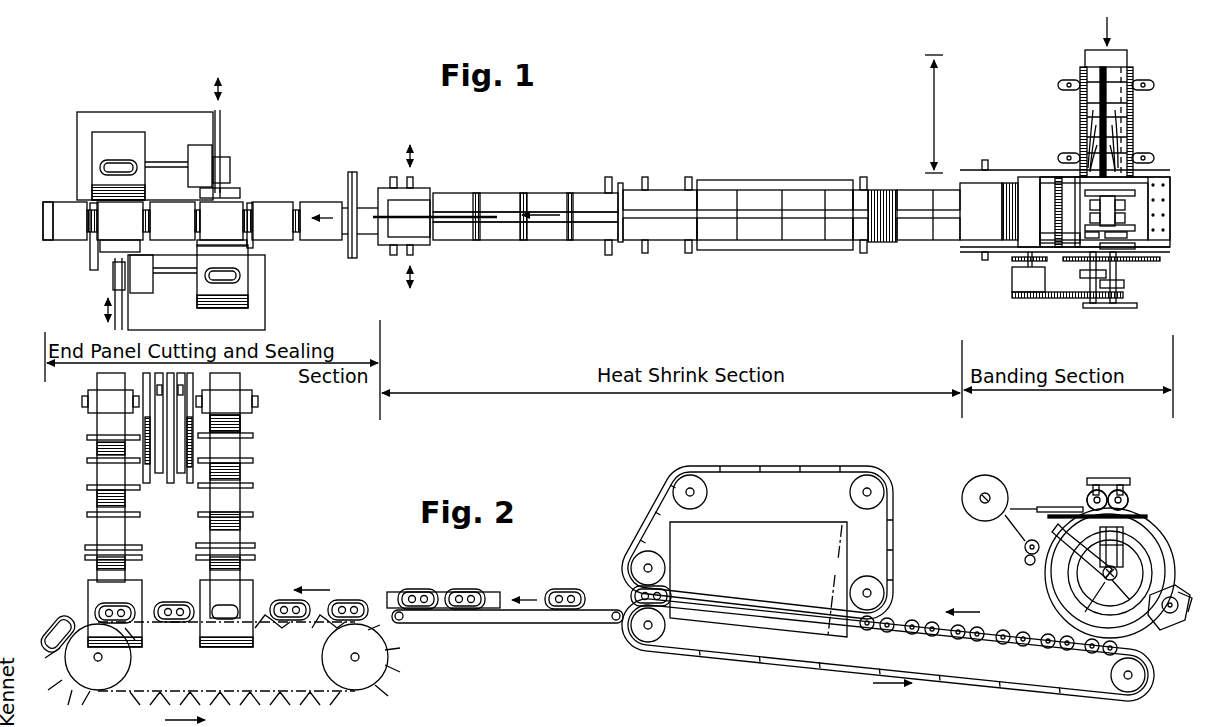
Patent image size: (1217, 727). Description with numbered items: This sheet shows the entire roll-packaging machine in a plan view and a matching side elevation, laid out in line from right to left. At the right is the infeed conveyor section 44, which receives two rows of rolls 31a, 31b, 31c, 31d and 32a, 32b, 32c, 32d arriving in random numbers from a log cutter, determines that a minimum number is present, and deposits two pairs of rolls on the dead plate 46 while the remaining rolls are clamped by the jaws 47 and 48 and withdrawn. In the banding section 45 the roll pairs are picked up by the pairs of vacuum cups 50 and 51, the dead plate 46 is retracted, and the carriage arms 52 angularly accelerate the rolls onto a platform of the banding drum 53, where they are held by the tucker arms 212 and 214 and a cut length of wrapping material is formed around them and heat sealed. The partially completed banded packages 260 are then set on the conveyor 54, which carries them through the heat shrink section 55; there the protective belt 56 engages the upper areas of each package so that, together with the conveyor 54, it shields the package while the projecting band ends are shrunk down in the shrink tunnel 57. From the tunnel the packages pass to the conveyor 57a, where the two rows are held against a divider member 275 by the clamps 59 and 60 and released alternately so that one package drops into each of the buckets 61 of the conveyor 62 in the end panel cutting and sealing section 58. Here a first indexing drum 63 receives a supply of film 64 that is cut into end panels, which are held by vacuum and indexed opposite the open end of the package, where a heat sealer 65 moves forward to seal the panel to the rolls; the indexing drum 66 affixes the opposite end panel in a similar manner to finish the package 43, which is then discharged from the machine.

In FIG. 1, the roll 31a is at (1040, 240).
In FIG. 2, the roll 31a is at (1087, 500).
In FIG. 1, the roll 31b is at (1090, 160).
In FIG. 1, the roll 31c is at (1092, 140).
In FIG. 1, the roll 31d is at (1093, 120).
In FIG. 1, the roll 32a is at (1115, 248).
In FIG. 2, the roll 32a is at (1128, 500).
In FIG. 1, the roll 32b is at (1140, 175).
In FIG. 1, the roll 32c is at (1116, 145).
In FIG. 1, the roll 32d is at (1113, 125).
In FIG. 1, the package 43 is at (70, 238).
In FIG. 2, the package 43 is at (58, 620).
In FIG. 1, the infeed conveyor section 44 is at (995, 54).
In FIG. 1, the banding section 45 is at (1072, 320).
In FIG. 2, the banding section 45 is at (1033, 456).
In FIG. 1, the dead plate 46 is at (1128, 210).
In FIG. 1, the jaw 47 is at (1082, 72).
In FIG. 1, the jaw 48 is at (1133, 72).
In FIG. 1, the vacuum cups 50 is at (1128, 236).
In FIG. 2, the vacuum cups 50 is at (1090, 490).
In FIG. 1, the vacuum cups 51 is at (1040, 175).
In FIG. 2, the carriage arms 52 is at (1182, 540).
In FIG. 1, the banding drum 53 is at (1130, 233).
In FIG. 2, the banding drum 53 is at (1047, 583).
In FIG. 1, the conveyor 54 is at (925, 240).
In FIG. 2, the conveyor 54 is at (925, 636).
In FIG. 1, the heat shrink section 55 is at (768, 255).
In FIG. 2, the heat shrink section 55 is at (868, 553).
In FIG. 1, the protective belt 56 is at (755, 197).
In FIG. 2, the protective belt 56 is at (893, 510).
In FIG. 1, the shrink tunnel 57 is at (768, 250).
In FIG. 2, the shrink tunnel 57 is at (841, 512).
In FIG. 1, the conveyor 57a is at (483, 242).
In FIG. 2, the conveyor 57a is at (493, 623).
In FIG. 1, the end panel cutting and sealing section 58 is at (280, 280).
In FIG. 2, the end panel cutting and sealing section 58 is at (312, 524).
In FIG. 1, the clamp 59 is at (418, 198).
In FIG. 1, the clamp 60 is at (418, 240).
In FIG. 2, the bucket 61 is at (295, 627).
In FIG. 2, the conveyor 62 is at (160, 690).
In FIG. 2, the first indexing drum 63 is at (253, 586).
In FIG. 2, the film 64 is at (242, 424).
In FIG. 1, the heat sealer 65 is at (256, 240).
In FIG. 1, the indexing drum 66 is at (92, 165).
In FIG. 2, the tucker arm 212 is at (1165, 625).
In FIG. 2, the tucker arm 214 is at (1188, 600).
In FIG. 1, the banded packages 260 is at (397, 232).
In FIG. 2, the banded packages 260 is at (418, 590).
In FIG. 1, the divider member 275 is at (492, 215).
In FIG. 2, the divider member 275 is at (490, 590).